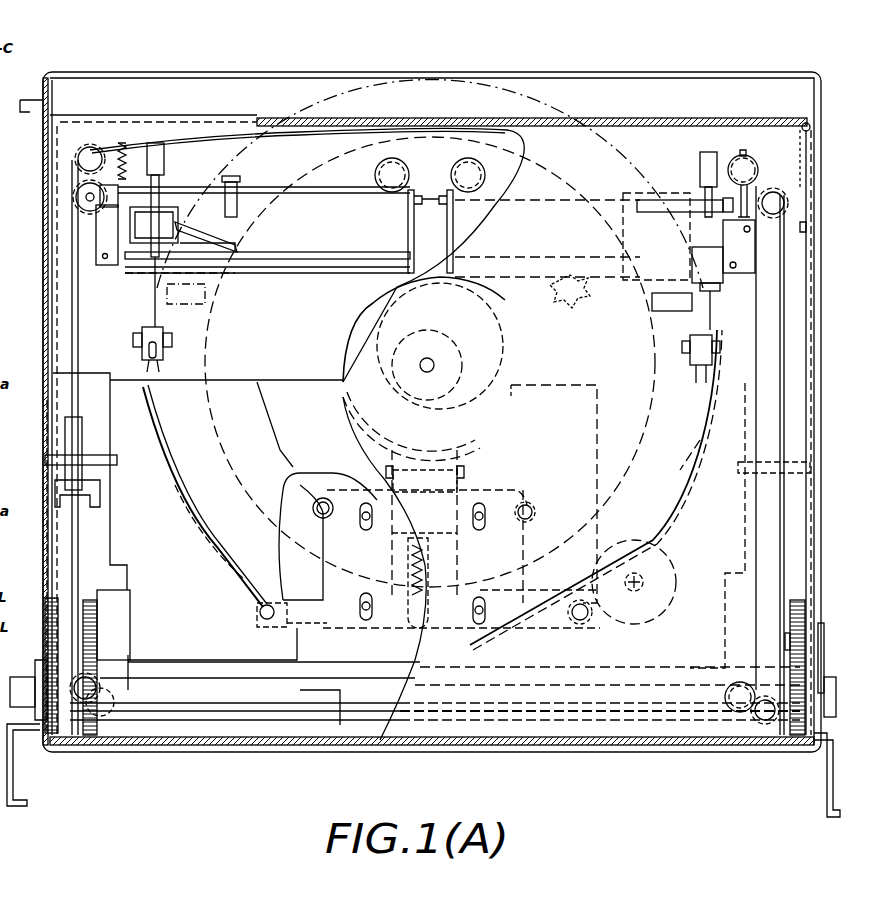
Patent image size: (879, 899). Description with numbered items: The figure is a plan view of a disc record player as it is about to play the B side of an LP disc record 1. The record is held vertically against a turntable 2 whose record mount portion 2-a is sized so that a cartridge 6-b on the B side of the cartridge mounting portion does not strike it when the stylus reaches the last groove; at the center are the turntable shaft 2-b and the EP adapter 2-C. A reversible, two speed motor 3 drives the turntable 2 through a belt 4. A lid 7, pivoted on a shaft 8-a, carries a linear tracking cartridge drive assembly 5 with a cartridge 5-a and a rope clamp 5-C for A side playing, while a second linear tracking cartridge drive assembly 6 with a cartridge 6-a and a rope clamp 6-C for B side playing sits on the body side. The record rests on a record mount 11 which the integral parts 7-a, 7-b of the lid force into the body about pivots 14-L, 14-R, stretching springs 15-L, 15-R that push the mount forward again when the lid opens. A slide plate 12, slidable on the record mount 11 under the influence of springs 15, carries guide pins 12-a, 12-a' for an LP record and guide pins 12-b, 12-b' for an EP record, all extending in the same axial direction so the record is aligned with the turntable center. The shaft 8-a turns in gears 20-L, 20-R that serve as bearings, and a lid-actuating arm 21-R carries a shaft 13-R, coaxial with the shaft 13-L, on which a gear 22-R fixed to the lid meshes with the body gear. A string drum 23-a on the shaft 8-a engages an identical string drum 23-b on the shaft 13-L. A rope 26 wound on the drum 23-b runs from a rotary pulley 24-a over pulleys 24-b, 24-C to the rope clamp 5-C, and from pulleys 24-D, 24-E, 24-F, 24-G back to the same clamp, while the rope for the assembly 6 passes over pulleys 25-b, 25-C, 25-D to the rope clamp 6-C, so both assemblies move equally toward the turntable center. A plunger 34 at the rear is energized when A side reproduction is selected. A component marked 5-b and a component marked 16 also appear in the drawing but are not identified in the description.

The LP disc record 1 is at (380, 84).
The turntable 2 is at (598, 515).
The record mount portion 2-a is at (347, 380).
The turntable shaft 2-b is at (434, 364).
The EP adapter 2-C is at (421, 330).
The reversible motor 3 is at (662, 612).
The belt 4 is at (650, 470).
The linear tracking cartridge drive assembly 5 is at (707, 330).
The cartridge 5-a is at (703, 373).
The right carriage clamp 5-b is at (690, 345).
The rope clamp 5-C is at (632, 190).
The linear tracking cartridge drive assembly 6 is at (160, 325).
The cartridge 6-a is at (152, 362).
The cartridge 6-b is at (165, 340).
The rope clamp 6-C is at (224, 182).
The lid 7 is at (2, 84).
The integral part of the lid 7-a is at (117, 460).
The integral part of the lid 7-b is at (737, 463).
The shaft 8-a is at (277, 733).
The record mount 11 is at (350, 747).
The slide plate 12 is at (323, 547).
The guide pin 12-a is at (249, 569).
The guide pin 12-a' is at (592, 582).
The guide pin 12-b is at (315, 472).
The guide pin 12-b' is at (542, 476).
The shaft 13-L is at (110, 633).
The shaft 13-R is at (773, 640).
The pivot 14-L is at (83, 262).
The pivot 14-R is at (822, 270).
The springs 15 is at (433, 570).
The spring 15-L is at (60, 122).
The spring 15-R is at (813, 115).
The clamp 16 is at (432, 468).
The gear 20-L is at (43, 747).
The gear 20-R is at (790, 752).
The lid-actuating arm 21-R is at (827, 660).
The gear 22-R is at (723, 687).
The string drum 23-a is at (80, 710).
The string drum 23-b is at (80, 597).
The rotary pulley 24-a is at (113, 697).
The pulley 24-b is at (747, 722).
The pulley 24-C is at (787, 197).
The pulley 24-D is at (103, 690).
The pulley 24-E is at (733, 710).
The pulley 24-F is at (751, 155).
The pulley 24-G is at (473, 160).
The pulley 25-b is at (43, 157).
The pulley 25-C is at (95, 145).
The pulley 25-D is at (400, 160).
The rope 26 is at (183, 710).
The plunger 34 is at (753, 253).